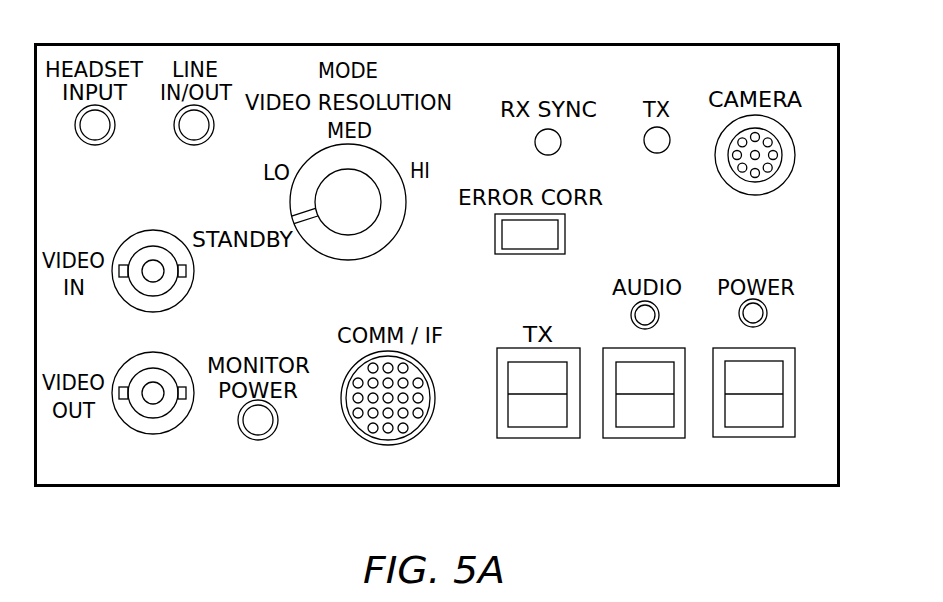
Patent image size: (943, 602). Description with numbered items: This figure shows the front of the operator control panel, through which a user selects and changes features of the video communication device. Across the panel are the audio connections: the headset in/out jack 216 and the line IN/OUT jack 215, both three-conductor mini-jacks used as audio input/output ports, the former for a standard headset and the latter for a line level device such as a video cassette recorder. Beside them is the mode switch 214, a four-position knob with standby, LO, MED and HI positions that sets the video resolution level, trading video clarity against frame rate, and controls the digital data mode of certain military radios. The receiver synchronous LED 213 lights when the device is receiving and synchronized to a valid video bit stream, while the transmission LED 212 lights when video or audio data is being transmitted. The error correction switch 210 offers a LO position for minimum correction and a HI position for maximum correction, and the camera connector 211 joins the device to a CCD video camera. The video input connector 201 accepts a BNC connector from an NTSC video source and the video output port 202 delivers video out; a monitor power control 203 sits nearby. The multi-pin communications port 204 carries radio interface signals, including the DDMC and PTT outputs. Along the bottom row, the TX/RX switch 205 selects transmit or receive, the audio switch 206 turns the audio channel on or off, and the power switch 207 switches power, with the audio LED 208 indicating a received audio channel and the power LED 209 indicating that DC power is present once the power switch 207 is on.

The video input connector 201 is at (190, 290).
The video output port 202 is at (125, 423).
The monitor power jack 203 is at (257, 440).
The communications port 204 is at (388, 445).
The TX/RX switch 205 is at (538, 438).
The audio switch 206 is at (642, 438).
The power switch 207 is at (758, 438).
The audio LED 208 is at (657, 317).
The power LED 209 is at (765, 310).
The error correction switch 210 is at (565, 240).
The camera connector 211 is at (753, 195).
The transmission LED 212 is at (660, 153).
The receiver synchronous LED 213 is at (561, 145).
The mode switch 214 is at (377, 250).
The line IN/OUT jack 215 is at (197, 145).
The headset in/out jack 216 is at (98, 145).